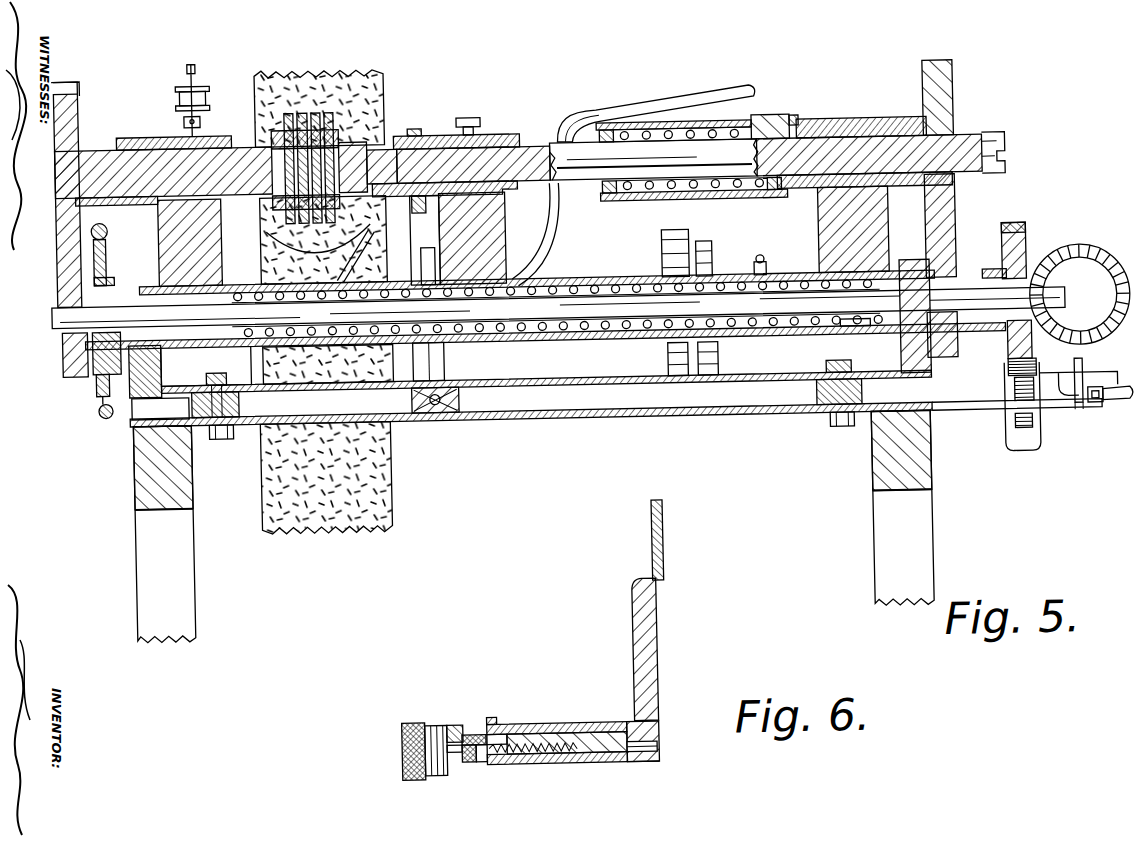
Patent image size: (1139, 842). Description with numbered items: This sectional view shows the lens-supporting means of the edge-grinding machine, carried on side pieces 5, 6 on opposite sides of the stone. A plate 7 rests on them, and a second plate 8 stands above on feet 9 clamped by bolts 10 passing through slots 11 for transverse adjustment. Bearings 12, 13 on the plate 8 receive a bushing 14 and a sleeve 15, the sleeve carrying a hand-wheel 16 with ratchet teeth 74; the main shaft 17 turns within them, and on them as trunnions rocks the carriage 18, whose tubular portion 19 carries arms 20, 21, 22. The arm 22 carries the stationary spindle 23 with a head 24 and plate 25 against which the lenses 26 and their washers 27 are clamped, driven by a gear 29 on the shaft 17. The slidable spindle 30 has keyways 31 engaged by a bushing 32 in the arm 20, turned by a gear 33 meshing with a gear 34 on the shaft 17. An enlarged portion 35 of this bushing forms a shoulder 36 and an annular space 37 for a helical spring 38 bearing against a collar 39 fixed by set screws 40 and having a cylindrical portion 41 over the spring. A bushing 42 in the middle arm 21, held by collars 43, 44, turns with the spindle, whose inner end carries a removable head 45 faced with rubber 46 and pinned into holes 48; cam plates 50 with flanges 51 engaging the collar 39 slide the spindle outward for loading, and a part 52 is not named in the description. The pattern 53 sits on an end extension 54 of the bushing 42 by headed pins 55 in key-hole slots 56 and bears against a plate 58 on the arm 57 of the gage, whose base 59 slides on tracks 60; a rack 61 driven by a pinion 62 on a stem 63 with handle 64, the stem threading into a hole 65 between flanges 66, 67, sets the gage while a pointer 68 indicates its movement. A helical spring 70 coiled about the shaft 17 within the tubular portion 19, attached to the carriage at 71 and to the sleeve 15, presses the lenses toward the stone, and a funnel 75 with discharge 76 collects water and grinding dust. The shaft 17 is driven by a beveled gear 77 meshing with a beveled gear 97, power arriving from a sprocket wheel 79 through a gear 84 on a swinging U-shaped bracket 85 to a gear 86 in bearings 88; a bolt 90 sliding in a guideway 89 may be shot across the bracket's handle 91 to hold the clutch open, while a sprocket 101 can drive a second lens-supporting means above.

In FIG. 5, the side piece 5 is at (159, 585).
In FIG. 5, the side piece 6 is at (886, 554).
In FIG. 5, the plate 7 is at (572, 419).
In FIG. 6, the plate 7 is at (582, 764).
In FIG. 5, the second plate 8 is at (548, 420).
In FIG. 6, the second plate 8 is at (527, 724).
In FIG. 5, the feet 9 is at (207, 428).
In FIG. 5, the bolts 10 is at (222, 434).
In FIG. 5, the slots 11 is at (161, 411).
In FIG. 5, the bearing 12 is at (924, 385).
In FIG. 5, the bearing 13 is at (140, 360).
In FIG. 5, the bushing 14 is at (843, 339).
In FIG. 5, the sleeve 15 is at (176, 344).
In FIG. 5, the hand-wheel 16 is at (98, 400).
In FIG. 5, the main shaft 17 is at (70, 318).
In FIG. 5, the swinging carriage 18 is at (590, 279).
In FIG. 5, the tubular portion 19 is at (590, 341).
In FIG. 5, the arm 20 is at (826, 238).
In FIG. 5, the middle arm 21 is at (492, 146).
In FIG. 5, the arm 22 is at (170, 240).
In FIG. 5, the rotary spindle 23 is at (112, 160).
In FIG. 5, the head 24 is at (222, 138).
In FIG. 5, the plate 25 is at (268, 110).
In FIG. 5, the lenses 26 is at (322, 125).
In FIG. 5, the washers 27 is at (305, 128).
In FIG. 5, the gear 29 is at (60, 275).
In FIG. 5, the slidable spindle 30 is at (1010, 160).
In FIG. 5, the keyways 31 is at (976, 145).
In FIG. 5, the bushing 32 is at (882, 124).
In FIG. 5, the gear 33 is at (958, 78).
In FIG. 5, the gear 34 is at (956, 268).
In FIG. 5, the enlarged end portion 35 is at (766, 90).
In FIG. 5, the shoulder 36 is at (800, 124).
In FIG. 5, the annular space 37 is at (718, 122).
In FIG. 5, the helical spring 38 is at (786, 118).
In FIG. 5, the collar 39 is at (606, 198).
In FIG. 5, the set screws 40 is at (612, 204).
In FIG. 5, the cylindrical portion 41 is at (655, 122).
In FIG. 5, the bushing 42 is at (530, 140).
In FIG. 5, the collar 43 is at (575, 126).
In FIG. 5, the collar 44 is at (475, 113).
In FIG. 5, the removable head 45 is at (372, 152).
In FIG. 5, the facing material 46 is at (350, 140).
In FIG. 5, the holes 48 is at (430, 132).
In FIG. 5, the cam plates 50 is at (529, 231).
In FIG. 5, the flanges 51 is at (552, 240).
In FIG. 5, the tube 52 is at (637, 92).
In FIG. 5, the pattern 53 is at (418, 133).
In FIG. 5, the end extension 54 is at (412, 200).
In FIG. 5, the headed pins 55 is at (422, 250).
In FIG. 5, the key-hole slots 56 is at (440, 210).
In FIG. 5, the arm 57 is at (448, 361).
In FIG. 6, the arm 57 is at (650, 648).
In FIG. 6, the plate 58 is at (647, 547).
In FIG. 5, the base 59 is at (440, 410).
In FIG. 6, the base 59 is at (632, 760).
In FIG. 5, the tracks 60 is at (460, 397).
In FIG. 6, the sliding rack 61 is at (463, 732).
In FIG. 6, the pinion 62 is at (459, 762).
In FIG. 5, the stem 63 is at (430, 414).
In FIG. 6, the stem 63 is at (548, 764).
In FIG. 6, the handle 64 is at (393, 750).
In FIG. 6, the threaded hole 65 is at (650, 748).
In FIG. 6, the flange 66 is at (445, 753).
In FIG. 6, the flange 67 is at (475, 762).
In FIG. 6, the pointer 68 is at (440, 726).
In FIG. 5, the helical spring 70 is at (248, 342).
In FIG. 5, the attachment point 71 is at (756, 276).
In FIG. 5, the ratchet teeth 74 is at (92, 366).
In FIG. 5, the funnel 75 is at (338, 252).
In FIG. 5, the tubular discharge 76 is at (262, 405).
In FIG. 5, the beveled gear 77 is at (1028, 266).
In FIG. 5, the sprocket wheel 79 is at (692, 240).
In FIG. 5, the gear 84 is at (1018, 440).
In FIG. 5, the U-shaped bracket 85 is at (1003, 455).
In FIG. 5, the gear 86 is at (1020, 234).
In FIG. 5, the bearings 88 is at (80, 88).
In FIG. 5, the guideway 89 is at (1088, 420).
In FIG. 5, the bolt 90 is at (1094, 414).
In FIG. 5, the handle 91 is at (1060, 405).
In FIG. 5, the beveled gear 97 is at (1086, 268).
In FIG. 5, the sprocket 101 is at (704, 360).